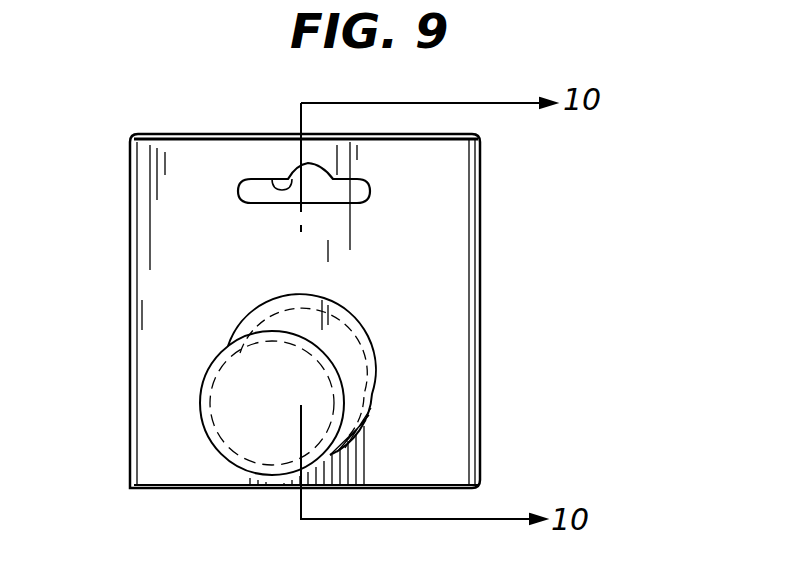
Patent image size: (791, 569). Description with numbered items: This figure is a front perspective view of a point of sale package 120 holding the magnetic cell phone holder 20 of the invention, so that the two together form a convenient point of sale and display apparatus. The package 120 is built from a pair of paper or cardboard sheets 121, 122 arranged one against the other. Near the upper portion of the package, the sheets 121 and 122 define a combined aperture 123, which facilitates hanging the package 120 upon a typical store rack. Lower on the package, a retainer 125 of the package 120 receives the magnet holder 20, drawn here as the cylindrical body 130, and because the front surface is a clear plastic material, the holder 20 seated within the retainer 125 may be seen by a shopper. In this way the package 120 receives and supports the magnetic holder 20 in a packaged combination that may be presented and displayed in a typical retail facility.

The magnetic cell phone holder 20 is at (365, 433).
The point of sale package 120 is at (488, 313).
The sheet 121 is at (480, 180).
The sheet 122 is at (465, 189).
The combined aperture 123 is at (275, 183).
The retainer 125 is at (201, 426).
The cylindrical holder 130 is at (204, 378).